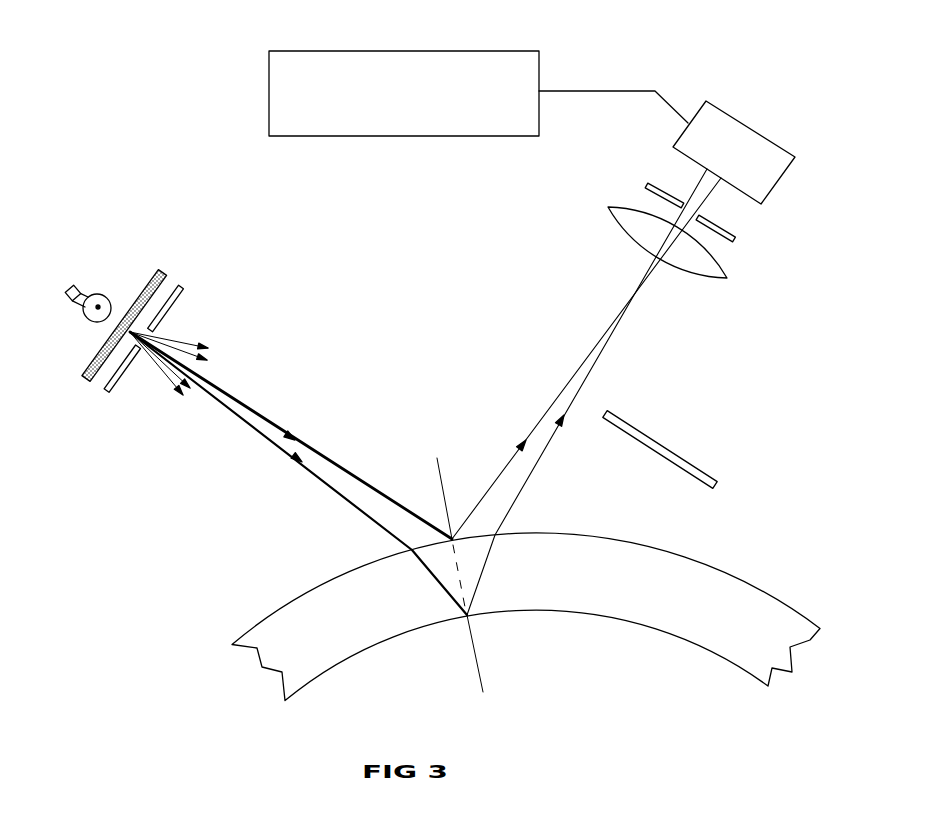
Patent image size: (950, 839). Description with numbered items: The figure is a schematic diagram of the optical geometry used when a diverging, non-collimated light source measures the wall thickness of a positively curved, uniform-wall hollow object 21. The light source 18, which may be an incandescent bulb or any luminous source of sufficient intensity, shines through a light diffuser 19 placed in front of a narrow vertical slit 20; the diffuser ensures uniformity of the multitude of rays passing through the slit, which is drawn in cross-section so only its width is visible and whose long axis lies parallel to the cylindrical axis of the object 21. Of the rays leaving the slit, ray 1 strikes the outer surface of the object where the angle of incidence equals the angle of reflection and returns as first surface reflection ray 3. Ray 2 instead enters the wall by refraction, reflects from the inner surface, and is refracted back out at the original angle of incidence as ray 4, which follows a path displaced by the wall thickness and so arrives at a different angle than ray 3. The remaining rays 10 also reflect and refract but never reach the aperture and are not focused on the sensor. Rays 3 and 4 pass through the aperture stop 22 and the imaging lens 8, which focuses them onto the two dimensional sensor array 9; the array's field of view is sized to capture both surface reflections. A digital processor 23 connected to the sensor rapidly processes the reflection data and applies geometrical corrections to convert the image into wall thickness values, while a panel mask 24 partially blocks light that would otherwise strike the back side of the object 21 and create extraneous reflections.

The incident light ray 1 is at (291, 435).
The second incident light ray 2 is at (298, 473).
The first surface reflection ray 3 is at (586, 358).
The internally reflected ray 4 is at (587, 392).
The imaging lens 8 is at (677, 253).
The two dimensional sensor array 9 is at (795, 157).
The other light rays 10 is at (205, 338).
The light source 18 is at (68, 298).
The light diffuser 19 is at (162, 272).
The narrow vertical slit 20 is at (187, 288).
The object 21 is at (732, 575).
The aperture stop 22 is at (708, 223).
The digital processor 23 is at (443, 49).
The panel mask 24 is at (685, 453).